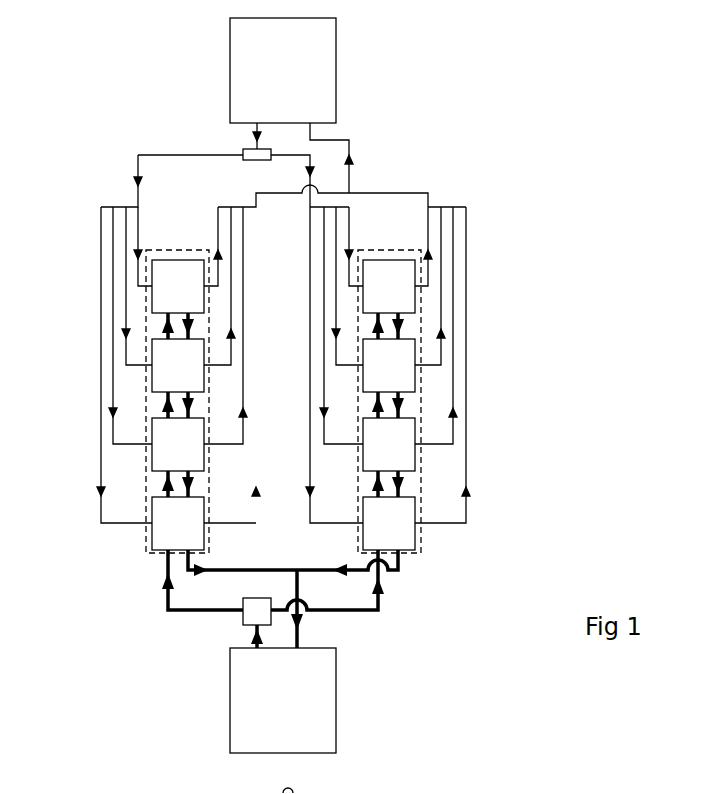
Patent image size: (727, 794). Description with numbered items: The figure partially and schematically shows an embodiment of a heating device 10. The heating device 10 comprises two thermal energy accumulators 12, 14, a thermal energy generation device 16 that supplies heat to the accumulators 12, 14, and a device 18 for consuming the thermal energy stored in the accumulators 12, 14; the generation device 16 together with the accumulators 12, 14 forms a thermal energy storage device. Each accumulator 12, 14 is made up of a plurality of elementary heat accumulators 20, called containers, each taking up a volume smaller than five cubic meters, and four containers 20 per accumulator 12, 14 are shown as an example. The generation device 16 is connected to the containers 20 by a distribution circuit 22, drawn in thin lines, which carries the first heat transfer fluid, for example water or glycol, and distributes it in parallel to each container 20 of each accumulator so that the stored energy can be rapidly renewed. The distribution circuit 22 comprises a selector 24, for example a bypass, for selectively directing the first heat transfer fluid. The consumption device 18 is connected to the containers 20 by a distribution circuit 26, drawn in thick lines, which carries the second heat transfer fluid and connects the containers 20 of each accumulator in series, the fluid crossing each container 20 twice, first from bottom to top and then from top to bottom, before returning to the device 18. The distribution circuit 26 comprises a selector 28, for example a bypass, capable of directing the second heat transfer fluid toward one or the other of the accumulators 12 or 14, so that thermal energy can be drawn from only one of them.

The heating device 10 is at (516, 129).
The thermal energy accumulator 12 is at (146, 537).
The thermal energy accumulator 14 is at (413, 557).
The thermal energy generation device 16 is at (336, 64).
The thermal energy consumption device 18 is at (336, 689).
The elementary heat accumulator 20 is at (173, 270).
The distribution circuit 22 is at (185, 147).
The selector 24 is at (257, 161).
The distribution circuit 26 is at (372, 621).
The selector 28 is at (240, 618).